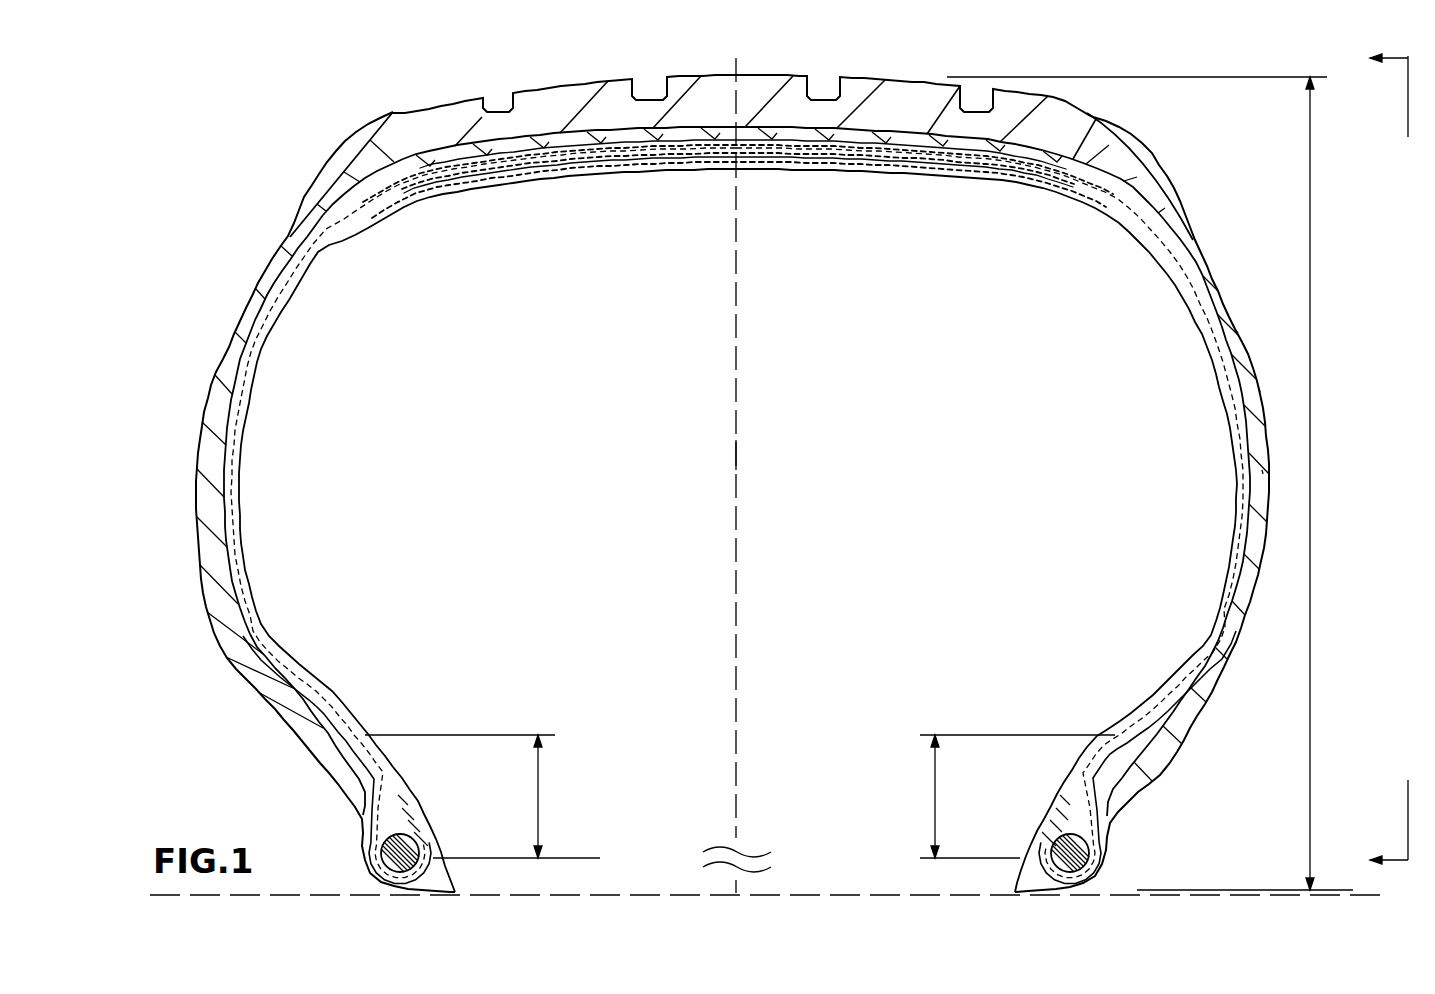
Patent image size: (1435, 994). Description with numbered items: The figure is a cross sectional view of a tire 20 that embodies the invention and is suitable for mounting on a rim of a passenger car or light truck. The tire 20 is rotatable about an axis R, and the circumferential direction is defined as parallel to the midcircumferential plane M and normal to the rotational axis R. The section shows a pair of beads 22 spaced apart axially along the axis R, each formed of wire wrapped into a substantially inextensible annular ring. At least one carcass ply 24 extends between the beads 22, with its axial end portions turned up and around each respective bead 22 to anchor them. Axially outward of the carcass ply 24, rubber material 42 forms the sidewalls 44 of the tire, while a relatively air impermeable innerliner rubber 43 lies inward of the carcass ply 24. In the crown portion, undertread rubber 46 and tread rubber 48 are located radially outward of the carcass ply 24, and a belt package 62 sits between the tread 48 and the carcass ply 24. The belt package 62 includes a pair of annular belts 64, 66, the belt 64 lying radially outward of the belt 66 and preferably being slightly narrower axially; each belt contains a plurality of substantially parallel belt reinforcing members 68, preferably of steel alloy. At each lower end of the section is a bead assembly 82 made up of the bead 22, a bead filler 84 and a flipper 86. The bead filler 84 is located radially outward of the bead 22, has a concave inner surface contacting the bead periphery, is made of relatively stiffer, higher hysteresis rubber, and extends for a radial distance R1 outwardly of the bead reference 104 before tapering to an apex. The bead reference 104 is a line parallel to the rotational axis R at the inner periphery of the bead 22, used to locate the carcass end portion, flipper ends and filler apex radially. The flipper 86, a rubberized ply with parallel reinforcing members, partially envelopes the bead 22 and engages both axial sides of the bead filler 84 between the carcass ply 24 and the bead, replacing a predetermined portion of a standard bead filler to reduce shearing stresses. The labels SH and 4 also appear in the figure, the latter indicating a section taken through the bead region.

The tire 20 is at (393, 108).
The bead 22 is at (380, 879).
The carcass ply 24 is at (243, 523).
The rubber material 42 is at (1207, 287).
The innerliner rubber 43 is at (1242, 514).
The sidewall 44 is at (1267, 410).
The undertread rubber 46 is at (880, 137).
The tread rubber 48 is at (741, 97).
The belt package 62 is at (1103, 190).
The belt 64 is at (1050, 120).
The belt 66 is at (1062, 198).
The belt reinforcing member 68 is at (611, 142).
The bead assembly 82 is at (360, 822).
The bead filler 84 is at (375, 785).
The flipper 86 is at (373, 775).
The bead reference 104 is at (567, 858).
The radial distance R1 is at (540, 797).
The rotational axis R is at (547, 897).
The section height SH is at (1150, 483).
The midcircumferential plane M is at (737, 468).
The section line 4- 4 is at (167, 317).